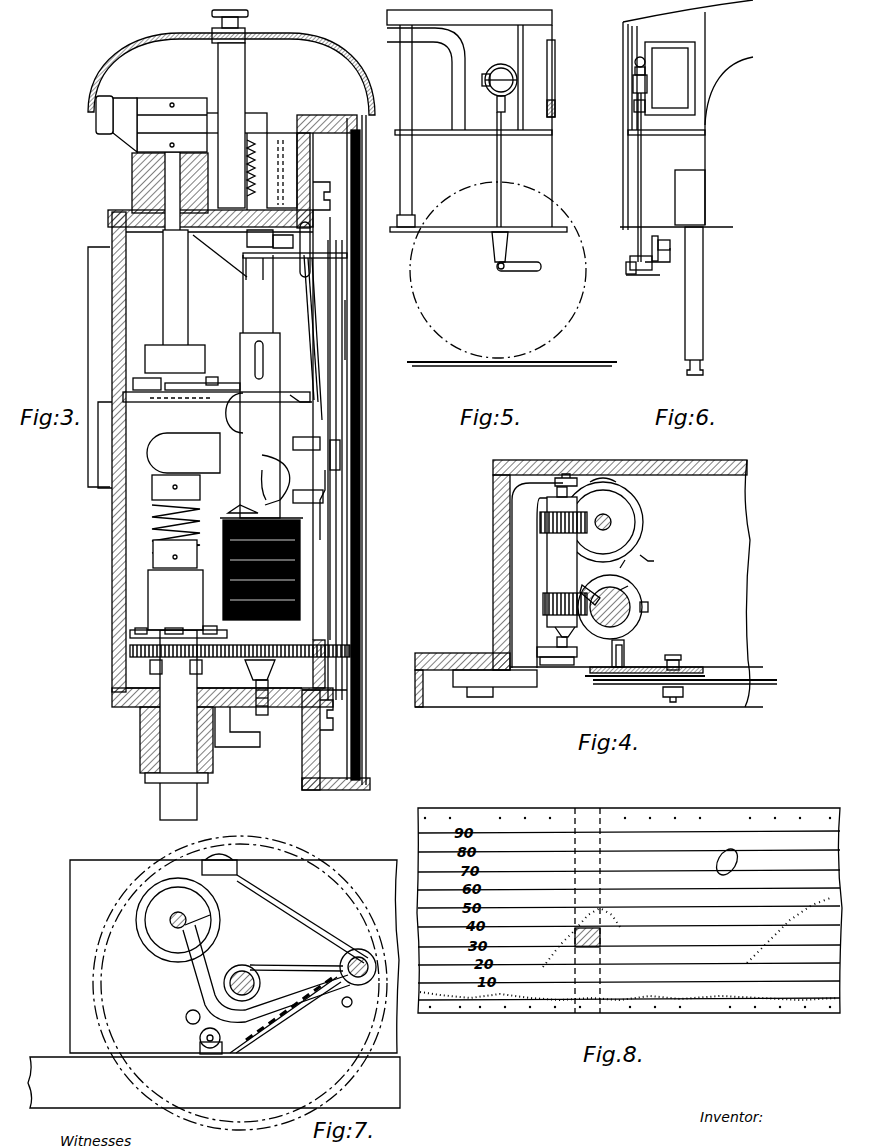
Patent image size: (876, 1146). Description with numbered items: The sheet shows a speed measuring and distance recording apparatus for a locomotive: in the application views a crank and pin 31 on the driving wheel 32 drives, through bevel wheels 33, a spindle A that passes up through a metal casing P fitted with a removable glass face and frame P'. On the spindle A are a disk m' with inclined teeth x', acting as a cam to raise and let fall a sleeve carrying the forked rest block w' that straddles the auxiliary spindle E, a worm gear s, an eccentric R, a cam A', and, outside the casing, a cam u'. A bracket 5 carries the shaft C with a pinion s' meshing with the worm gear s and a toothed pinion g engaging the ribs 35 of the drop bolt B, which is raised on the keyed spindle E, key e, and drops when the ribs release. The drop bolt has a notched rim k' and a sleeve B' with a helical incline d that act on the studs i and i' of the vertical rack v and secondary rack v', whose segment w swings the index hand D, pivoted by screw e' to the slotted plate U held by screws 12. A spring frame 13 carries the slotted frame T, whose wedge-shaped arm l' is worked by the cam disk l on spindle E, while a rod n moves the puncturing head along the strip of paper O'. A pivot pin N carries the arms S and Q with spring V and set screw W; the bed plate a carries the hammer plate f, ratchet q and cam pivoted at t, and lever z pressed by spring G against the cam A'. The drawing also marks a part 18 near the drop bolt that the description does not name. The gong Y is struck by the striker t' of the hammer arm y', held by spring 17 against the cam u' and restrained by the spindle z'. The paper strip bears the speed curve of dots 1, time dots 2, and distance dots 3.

In FIG. 3, the dome cover Y' is at (231, 74).
In FIG. 3, the hammer arm y' is at (225, 109).
In FIG. 7, the hammer arm y' is at (350, 973).
In FIG. 3, the cam u' is at (172, 125).
In FIG. 7, the cam u' is at (259, 968).
In FIG. 3, the striker t' is at (97, 127).
In FIG. 7, the striker t' is at (285, 908).
In FIG. 3, the spindle z' is at (282, 144).
In FIG. 3, the spring 17 is at (261, 171).
In FIG. 7, the spring 17 is at (298, 966).
In FIG. 3, the screws 12 is at (320, 190).
In FIG. 3, the metal casing P is at (218, 452).
In FIG. 4, the metal casing P is at (591, 583).
In FIG. 7, the metal casing P is at (234, 956).
In FIG. 3, the glass face and frame P' is at (371, 450).
In FIG. 7, the glass face and frame P' is at (214, 1082).
In FIG. 3, the spindle A is at (176, 486).
In FIG. 5, the spindle A is at (503, 169).
In FIG. 6, the spindle A is at (644, 177).
In FIG. 4, the spindle A is at (614, 522).
In FIG. 7, the spindle A is at (178, 920).
In FIG. 3, the pivot pin N is at (300, 256).
In FIG. 3, the auxiliary spindle E is at (244, 295).
In FIG. 3, the cam disk l is at (236, 277).
In FIG. 3, the wedge-shaped arm l' is at (258, 277).
In FIG. 3, the sleeve B' is at (260, 425).
In FIG. 4, the sleeve B' is at (655, 617).
In FIG. 3, the key e is at (299, 403).
In FIG. 3, the set screw W is at (248, 413).
In FIG. 3, the helical incline d is at (277, 480).
In FIG. 3, the eccentric R is at (183, 453).
In FIG. 3, the cam A' is at (175, 359).
In FIG. 3, the spring G is at (132, 385).
In FIG. 3, the lever z is at (180, 386).
In FIG. 3, the pivot t is at (211, 372).
In FIG. 3, the ratchet q is at (223, 382).
In FIG. 3, the bracket bed plate a is at (216, 406).
In FIG. 3, the hammer plate f is at (301, 387).
In FIG. 3, the stud i' is at (306, 435).
In FIG. 4, the stud i' is at (626, 656).
In FIG. 3, the stud i is at (308, 489).
In FIG. 4, the stud i is at (613, 653).
In FIG. 3, the notched rim k' is at (239, 503).
In FIG. 4, the notched rim k' is at (651, 576).
In FIG. 3, the worm gear s is at (166, 514).
In FIG. 3, the peripheral surface ribs 35 is at (254, 569).
In FIG. 3, the drop bolt B is at (178, 589).
In FIG. 4, the drop bolt B is at (655, 611).
In FIG. 3, the inclined teeth x' is at (138, 623).
In FIG. 4, the inclined teeth x' is at (624, 521).
In FIG. 7, the inclined teeth x' is at (266, 1025).
In FIG. 3, the disk m' is at (170, 623).
In FIG. 4, the disk m' is at (604, 484).
In FIG. 3, the forked rest block w' is at (211, 622).
In FIG. 3, the depending arm S is at (305, 305).
In FIG. 3, the spring V is at (309, 322).
In FIG. 3, the depending arm Q is at (312, 346).
In FIG. 3, the vertically slotted frame T is at (330, 470).
In FIG. 3, the slotted metal plate U is at (352, 337).
In FIG. 3, the spring frame 13 is at (355, 337).
In FIG. 3, the rod n is at (350, 501).
In FIG. 3, the tooth 18 is at (262, 483).
In FIG. 4, the tooth 18 is at (601, 590).
In FIG. 5, the crank and pin 31 is at (516, 261).
In FIG. 6, the crank and pin 31 is at (665, 254).
In FIG. 5, the driving wheel 32 is at (498, 270).
In FIG. 6, the driving wheel 32 is at (708, 301).
In FIG. 6, the bevel wheels 33 is at (638, 275).
In FIG. 4, the bracket 5 is at (495, 681).
In FIG. 4, the arm n' is at (626, 559).
In FIG. 4, the shaft C is at (557, 576).
In FIG. 4, the pinion s' is at (563, 532).
In FIG. 4, the toothed pinion g is at (543, 605).
In FIG. 4, the disk E' is at (624, 607).
In FIG. 4, the screw e' is at (675, 657).
In FIG. 4, the secondary rack v' is at (646, 697).
In FIG. 4, the vertical rack v is at (621, 710).
In FIG. 4, the index hand D is at (691, 683).
In FIG. 4, the toothed segment w is at (675, 710).
In FIG. 7, the gong Y is at (240, 983).
In FIG. 8, the line of dots 1 is at (685, 932).
In FIG. 8, the line of dots 2 is at (627, 911).
In FIG. 8, the line of dots 3 is at (560, 1006).
In FIG. 8, the strip of paper O' is at (730, 860).